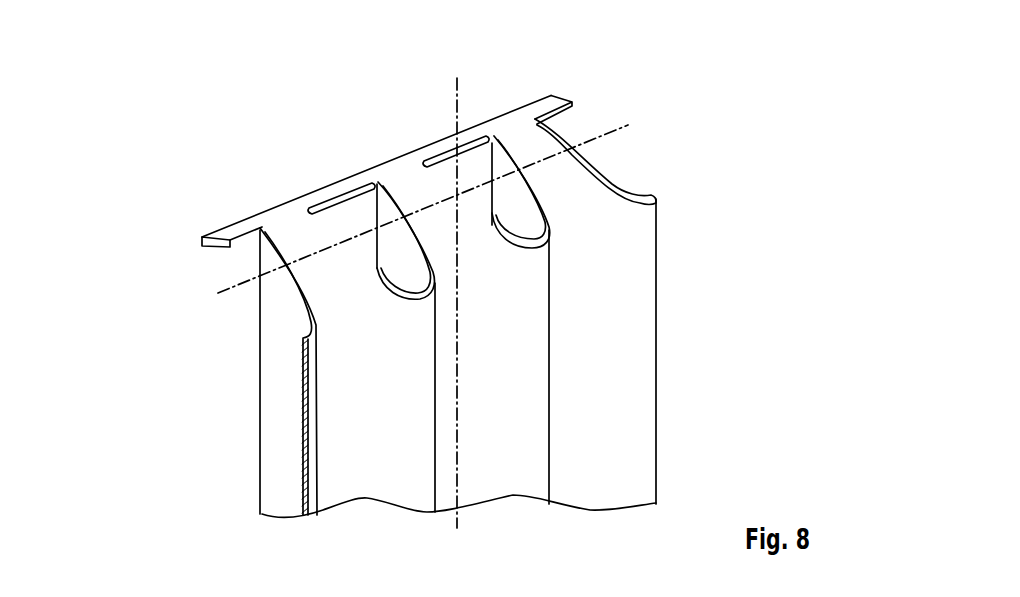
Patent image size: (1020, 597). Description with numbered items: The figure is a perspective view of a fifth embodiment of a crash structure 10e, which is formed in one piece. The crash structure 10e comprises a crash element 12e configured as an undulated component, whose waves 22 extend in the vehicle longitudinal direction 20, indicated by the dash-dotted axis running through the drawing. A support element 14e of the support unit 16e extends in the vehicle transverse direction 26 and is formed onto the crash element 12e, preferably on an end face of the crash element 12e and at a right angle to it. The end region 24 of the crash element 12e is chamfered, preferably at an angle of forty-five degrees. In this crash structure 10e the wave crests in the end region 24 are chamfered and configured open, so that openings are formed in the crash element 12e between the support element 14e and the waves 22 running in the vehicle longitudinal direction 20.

The crash structure 10e is at (233, 206).
The crash element 12e is at (638, 326).
The support element 14e is at (513, 107).
The support unit 16e is at (318, 164).
The vehicle longitudinal direction 20 is at (456, 97).
The waves 22 is at (533, 385).
The end region 24 is at (246, 306).
The vehicle transverse direction 26 is at (229, 291).